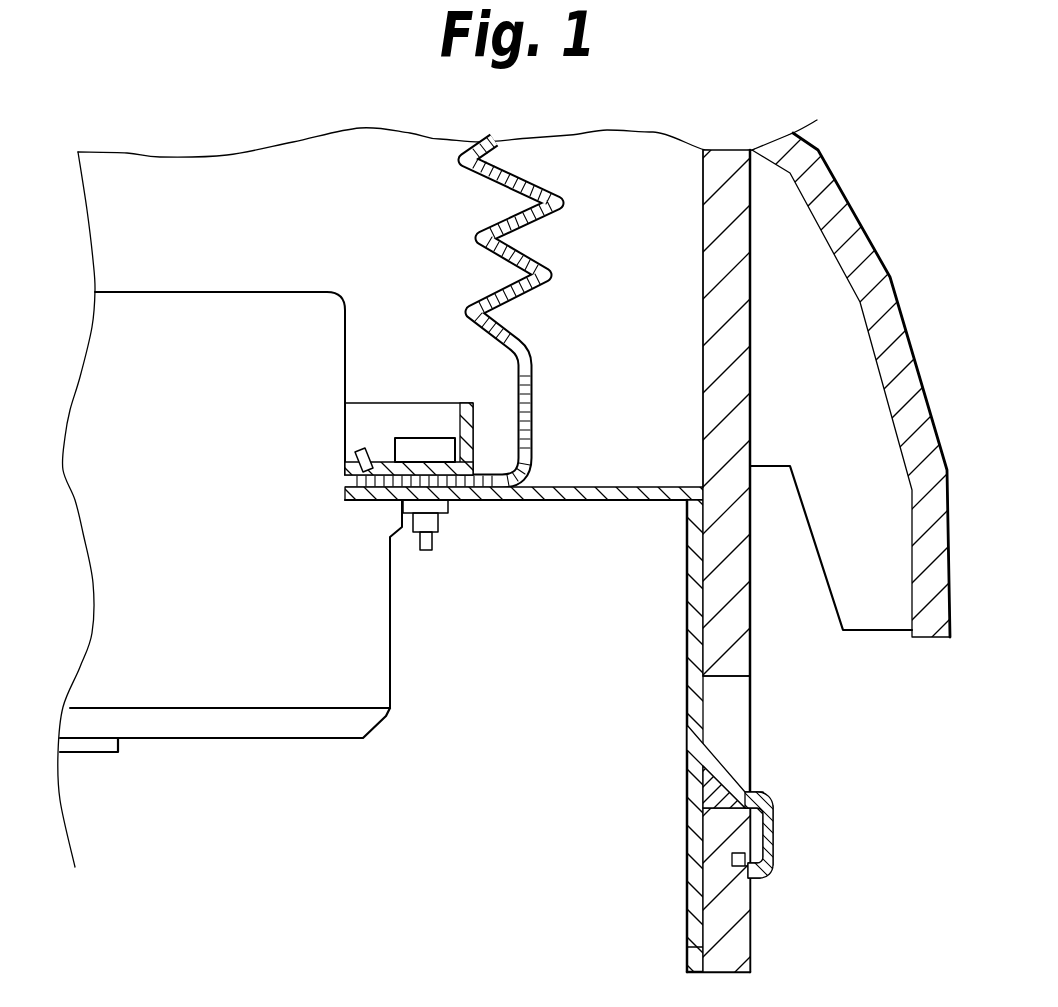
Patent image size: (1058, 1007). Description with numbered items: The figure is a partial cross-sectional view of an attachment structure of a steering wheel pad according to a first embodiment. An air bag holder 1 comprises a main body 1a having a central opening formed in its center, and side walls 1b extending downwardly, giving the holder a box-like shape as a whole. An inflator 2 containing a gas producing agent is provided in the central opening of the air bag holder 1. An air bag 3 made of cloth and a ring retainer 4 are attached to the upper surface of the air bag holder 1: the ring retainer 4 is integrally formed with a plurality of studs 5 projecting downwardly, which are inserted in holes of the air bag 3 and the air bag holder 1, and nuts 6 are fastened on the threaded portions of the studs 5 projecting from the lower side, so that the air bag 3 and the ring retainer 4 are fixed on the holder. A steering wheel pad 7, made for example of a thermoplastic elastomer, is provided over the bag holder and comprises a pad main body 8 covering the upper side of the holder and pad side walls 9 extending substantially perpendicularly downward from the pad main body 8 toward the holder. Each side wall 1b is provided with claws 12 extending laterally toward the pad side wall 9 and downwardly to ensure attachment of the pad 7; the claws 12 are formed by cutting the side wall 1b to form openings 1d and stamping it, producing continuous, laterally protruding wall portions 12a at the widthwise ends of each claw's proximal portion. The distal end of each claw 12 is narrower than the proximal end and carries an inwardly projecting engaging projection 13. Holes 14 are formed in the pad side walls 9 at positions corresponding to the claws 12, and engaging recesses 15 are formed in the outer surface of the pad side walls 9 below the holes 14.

The air bag holder 1 is at (626, 689).
The main body 1a is at (568, 500).
The side walls 1b is at (687, 612).
The openings 1d is at (687, 862).
The inflator 2 is at (278, 292).
The air bag 3 is at (548, 280).
The ring retainer 4 is at (450, 403).
The studs 5 is at (438, 524).
The nuts 6 is at (448, 505).
The steering wheel pad 7 is at (643, 375).
The pad main body 8 is at (890, 263).
The pad side walls 9 is at (598, 561).
The claws 12 is at (725, 813).
The wall portions 12a is at (702, 792).
The engaging projection 13 is at (757, 880).
The holes 14 is at (732, 680).
The engaging recesses 15 is at (717, 877).